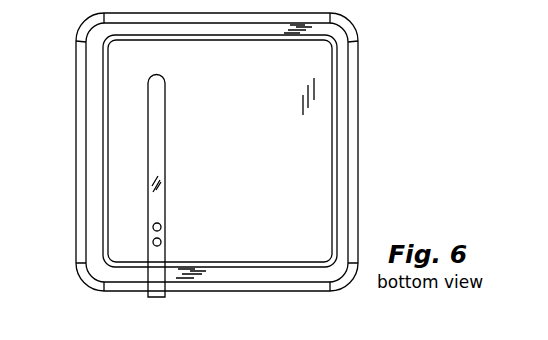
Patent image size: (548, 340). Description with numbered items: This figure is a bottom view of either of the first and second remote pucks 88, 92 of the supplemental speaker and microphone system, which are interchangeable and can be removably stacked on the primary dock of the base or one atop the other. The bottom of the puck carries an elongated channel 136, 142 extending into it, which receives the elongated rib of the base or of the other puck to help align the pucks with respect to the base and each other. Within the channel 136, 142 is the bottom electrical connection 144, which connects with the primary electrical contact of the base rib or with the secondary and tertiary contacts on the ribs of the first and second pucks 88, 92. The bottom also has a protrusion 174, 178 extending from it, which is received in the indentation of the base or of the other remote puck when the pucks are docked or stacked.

The first remote puck 88 is at (272, 155).
The second remote puck 92 is at (388, 136).
The elongated channel 136 is at (95, 186).
The elongated channel 142 is at (95, 186).
The bottom electrical connection 144 is at (153, 227).
The protrusion 174 is at (259, 151).
The protrusion 178 is at (320, 118).